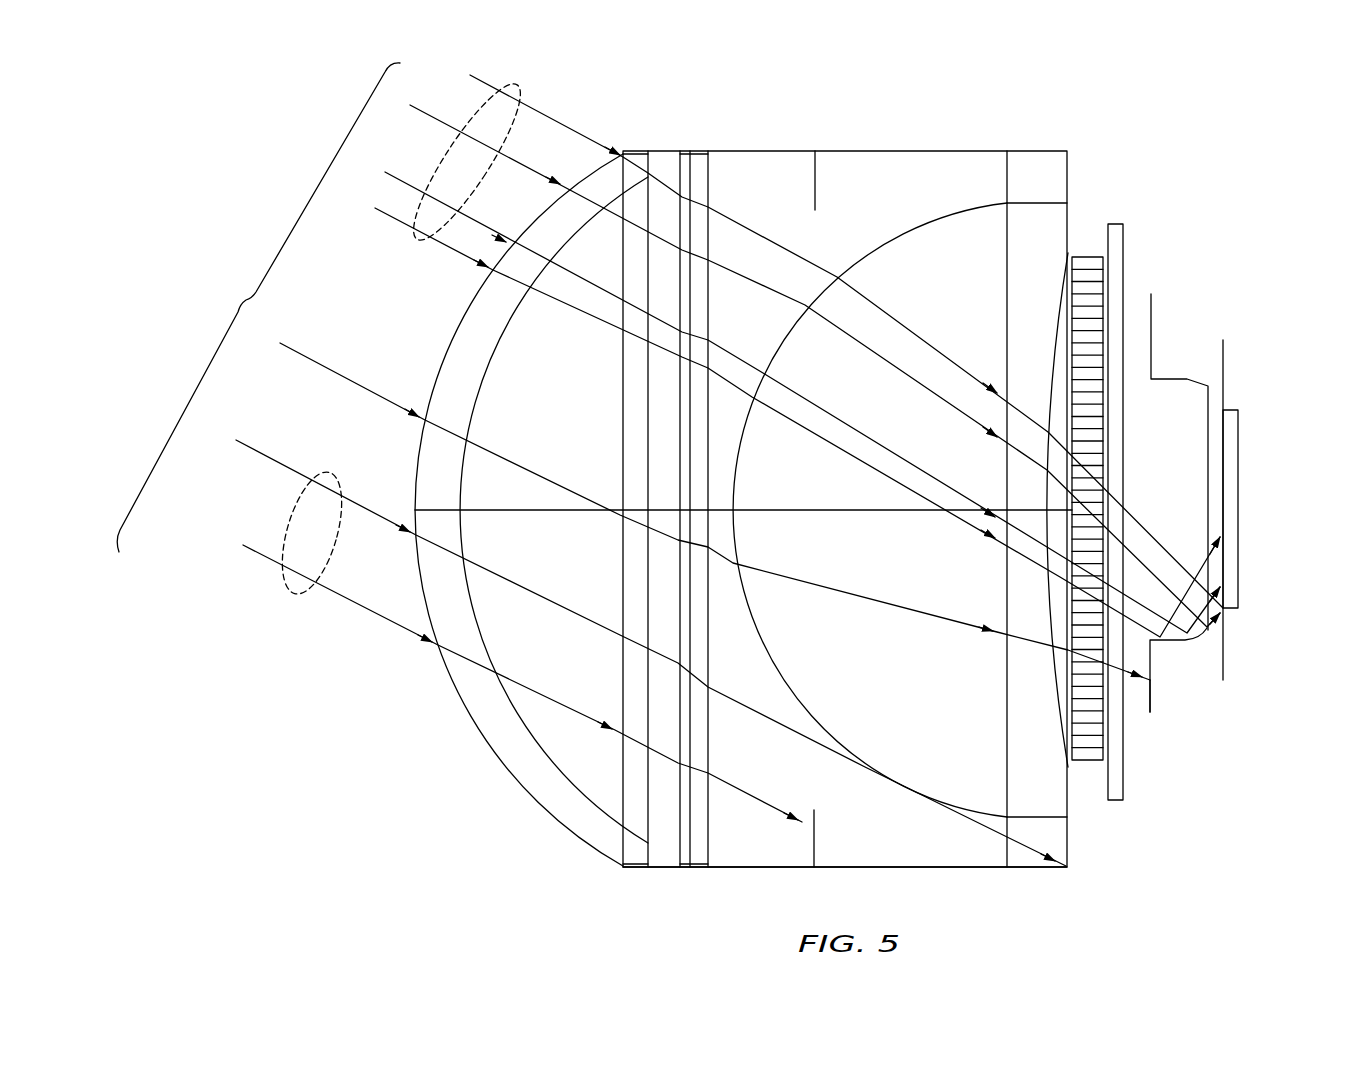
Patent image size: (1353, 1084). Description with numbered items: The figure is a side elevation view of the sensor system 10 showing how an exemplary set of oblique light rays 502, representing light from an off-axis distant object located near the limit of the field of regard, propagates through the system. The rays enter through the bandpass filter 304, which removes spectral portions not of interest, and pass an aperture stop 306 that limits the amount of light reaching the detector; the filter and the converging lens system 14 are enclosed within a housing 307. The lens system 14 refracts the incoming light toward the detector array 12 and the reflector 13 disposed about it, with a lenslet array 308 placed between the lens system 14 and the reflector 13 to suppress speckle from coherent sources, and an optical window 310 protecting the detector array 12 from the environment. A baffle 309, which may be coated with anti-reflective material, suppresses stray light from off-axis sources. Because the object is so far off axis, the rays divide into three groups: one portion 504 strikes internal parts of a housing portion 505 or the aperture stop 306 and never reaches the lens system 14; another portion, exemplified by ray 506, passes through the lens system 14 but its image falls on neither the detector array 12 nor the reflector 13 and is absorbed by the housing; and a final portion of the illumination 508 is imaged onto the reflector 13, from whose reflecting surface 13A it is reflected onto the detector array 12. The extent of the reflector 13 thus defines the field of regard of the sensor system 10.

The sensor system 10 is at (1056, 122).
The detector array 12 is at (1238, 470).
The reflector 13 is at (1162, 380).
The reflecting surface 13A is at (1198, 392).
The lens system 14 is at (927, 222).
The bandpass filter 304 is at (690, 152).
The aperture stop 306 is at (827, 152).
The housing 307 is at (1005, 152).
The lenslet array 308 is at (1087, 257).
The baffle 309 is at (1152, 712).
The optical window 310 is at (1123, 238).
The oblique light rays 502 is at (245, 298).
The portion of the rays 504 is at (282, 583).
The housing portion 505 is at (972, 868).
The ray 506 is at (340, 378).
The portion of the illumination 508 is at (520, 97).